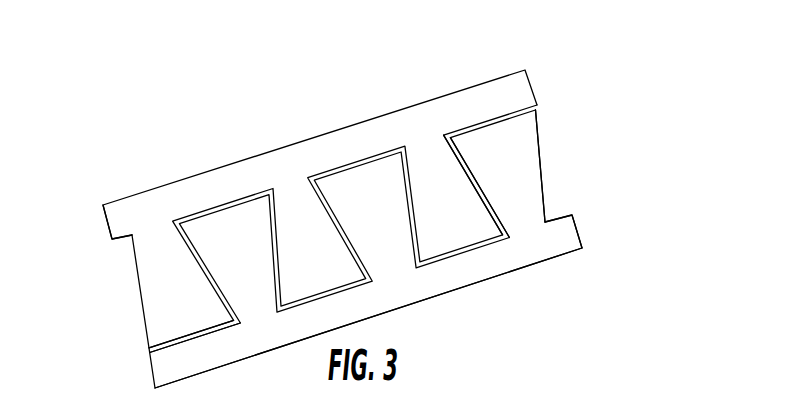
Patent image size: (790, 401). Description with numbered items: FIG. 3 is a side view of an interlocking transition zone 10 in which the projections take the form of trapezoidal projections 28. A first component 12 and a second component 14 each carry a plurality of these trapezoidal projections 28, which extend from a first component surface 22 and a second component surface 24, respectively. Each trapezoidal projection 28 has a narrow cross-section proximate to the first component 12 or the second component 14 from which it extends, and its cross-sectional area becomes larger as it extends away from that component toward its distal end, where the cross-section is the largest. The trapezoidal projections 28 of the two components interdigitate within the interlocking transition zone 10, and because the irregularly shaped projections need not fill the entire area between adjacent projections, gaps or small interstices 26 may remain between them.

The interlocking transition zone 10 is at (606, 66).
The first component 12 is at (422, 279).
The second component 14 is at (255, 182).
The first component surface 22 is at (560, 217).
The second component surface 24 is at (125, 238).
The interstices 26 is at (152, 345).
The trapezoidal projections 28 is at (503, 167).